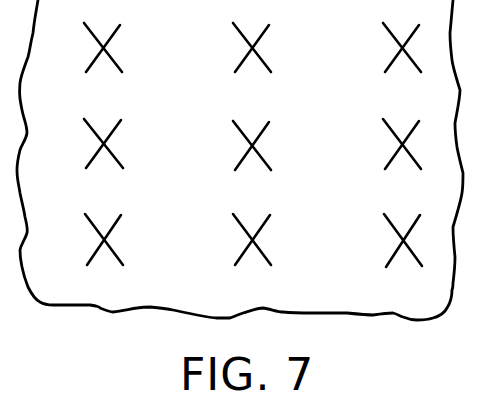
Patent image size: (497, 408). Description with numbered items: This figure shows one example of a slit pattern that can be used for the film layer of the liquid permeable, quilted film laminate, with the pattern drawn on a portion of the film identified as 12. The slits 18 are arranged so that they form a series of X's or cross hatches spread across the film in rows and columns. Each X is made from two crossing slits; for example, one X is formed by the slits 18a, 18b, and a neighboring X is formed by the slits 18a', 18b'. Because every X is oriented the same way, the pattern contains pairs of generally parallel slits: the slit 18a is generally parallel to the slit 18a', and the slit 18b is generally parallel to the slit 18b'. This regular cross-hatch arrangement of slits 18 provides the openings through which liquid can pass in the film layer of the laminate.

The sheet substrate 12 is at (343, 257).
The slits 18 is at (272, 48).
The slit 18a is at (85, 123).
The slit 18b is at (126, 123).
The slit 18a' is at (241, 125).
The slit 18b' is at (286, 129).